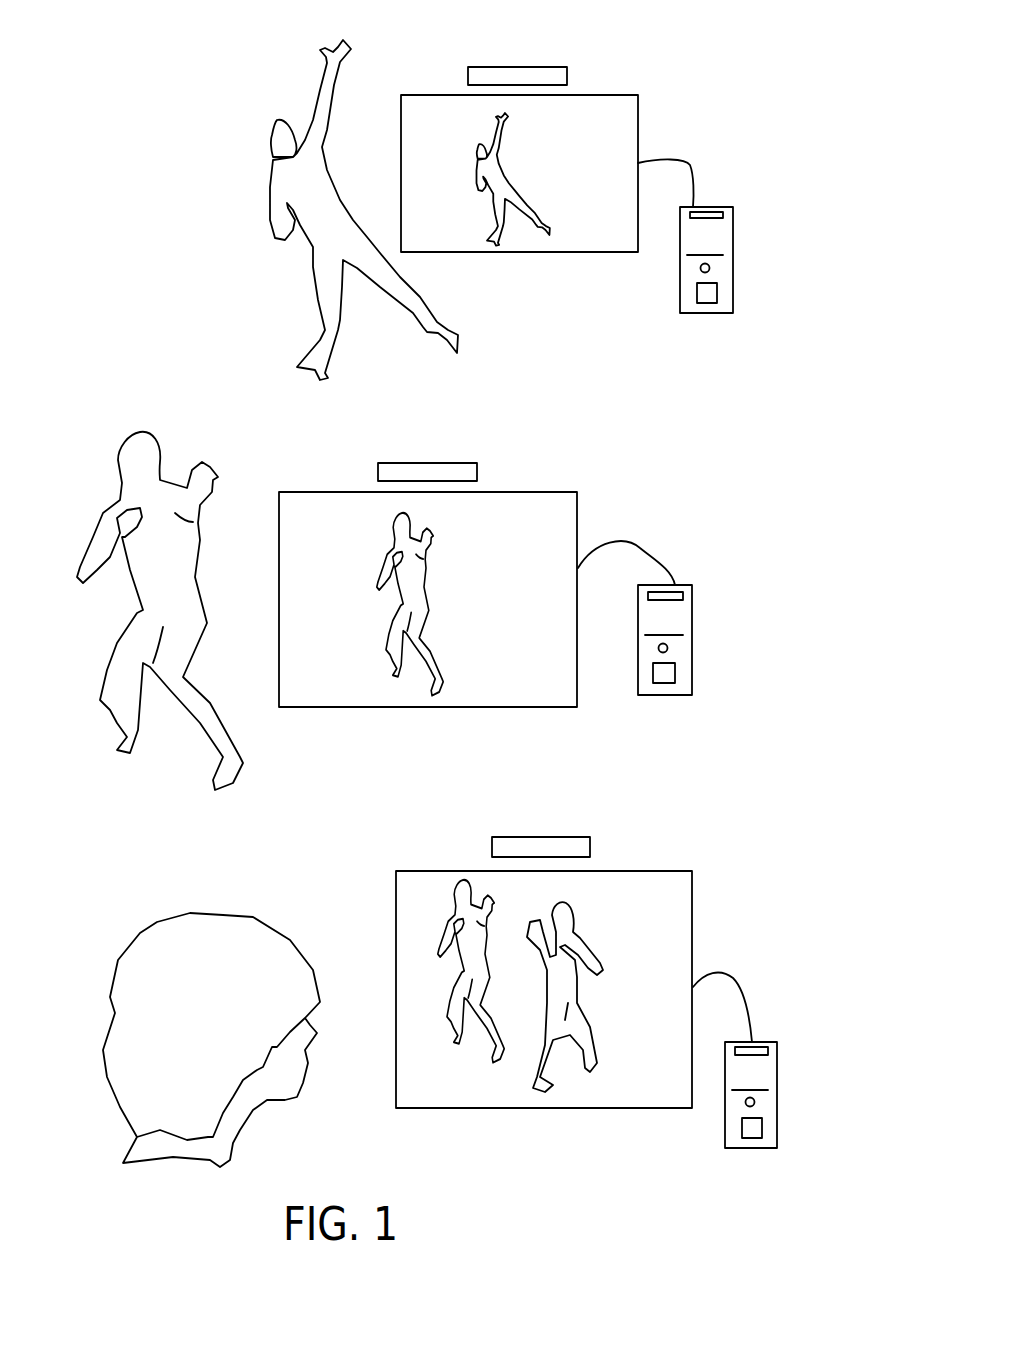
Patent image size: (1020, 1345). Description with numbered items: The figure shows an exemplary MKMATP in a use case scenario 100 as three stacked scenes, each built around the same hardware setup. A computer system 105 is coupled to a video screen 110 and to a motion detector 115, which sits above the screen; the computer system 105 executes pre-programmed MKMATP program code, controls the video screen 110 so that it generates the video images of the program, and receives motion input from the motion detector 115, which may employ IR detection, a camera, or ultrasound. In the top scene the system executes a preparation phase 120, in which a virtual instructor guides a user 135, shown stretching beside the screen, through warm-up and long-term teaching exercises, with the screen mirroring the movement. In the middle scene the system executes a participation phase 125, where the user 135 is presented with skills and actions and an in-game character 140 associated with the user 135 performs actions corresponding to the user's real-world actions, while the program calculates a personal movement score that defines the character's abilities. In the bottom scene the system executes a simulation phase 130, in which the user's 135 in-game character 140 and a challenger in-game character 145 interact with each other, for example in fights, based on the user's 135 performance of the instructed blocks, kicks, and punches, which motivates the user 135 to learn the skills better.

The MKMATP in a use case scenario 100 is at (171, 82).
The computer system 105 is at (735, 213).
The video screen 110 is at (638, 127).
The motion detector 115 is at (490, 66).
The preparation phase 120 is at (716, 73).
The participation phase 125 is at (617, 477).
The simulation phase 130 is at (670, 830).
The user 135 is at (274, 127).
The in-game character 140 is at (508, 154).
The challenger in-game character 145 is at (577, 905).